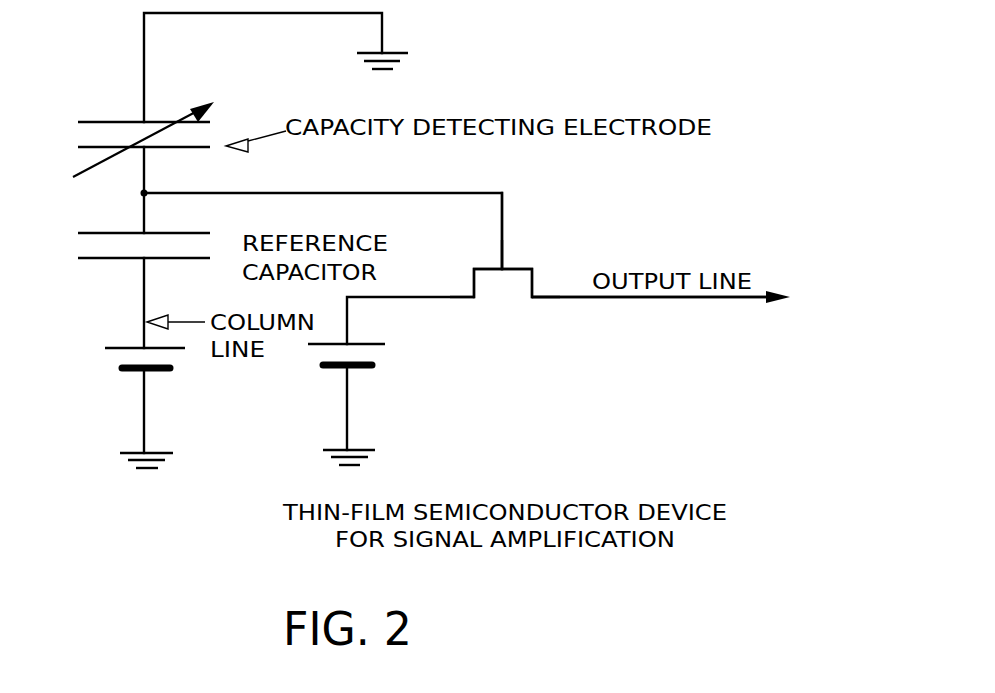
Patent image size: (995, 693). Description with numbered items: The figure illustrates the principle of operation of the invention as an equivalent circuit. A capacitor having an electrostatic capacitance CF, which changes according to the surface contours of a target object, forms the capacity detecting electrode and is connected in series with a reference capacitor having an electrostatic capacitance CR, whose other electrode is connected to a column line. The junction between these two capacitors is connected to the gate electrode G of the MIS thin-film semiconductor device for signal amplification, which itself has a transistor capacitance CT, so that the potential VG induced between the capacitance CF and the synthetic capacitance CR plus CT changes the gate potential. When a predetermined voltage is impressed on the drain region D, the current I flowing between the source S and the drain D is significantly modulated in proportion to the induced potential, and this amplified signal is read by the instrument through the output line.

The electrostatic capacitance of the capacity detecting electrode CF is at (117, 139).
The electrostatic capacitance of the reference capacitor CR is at (115, 251).
The transistor capacitance of the MIS thin-film semiconductor device CT is at (505, 339).
The gate electrode G is at (514, 254).
The drain region D is at (463, 317).
The source S is at (546, 317).
The current I is at (814, 303).